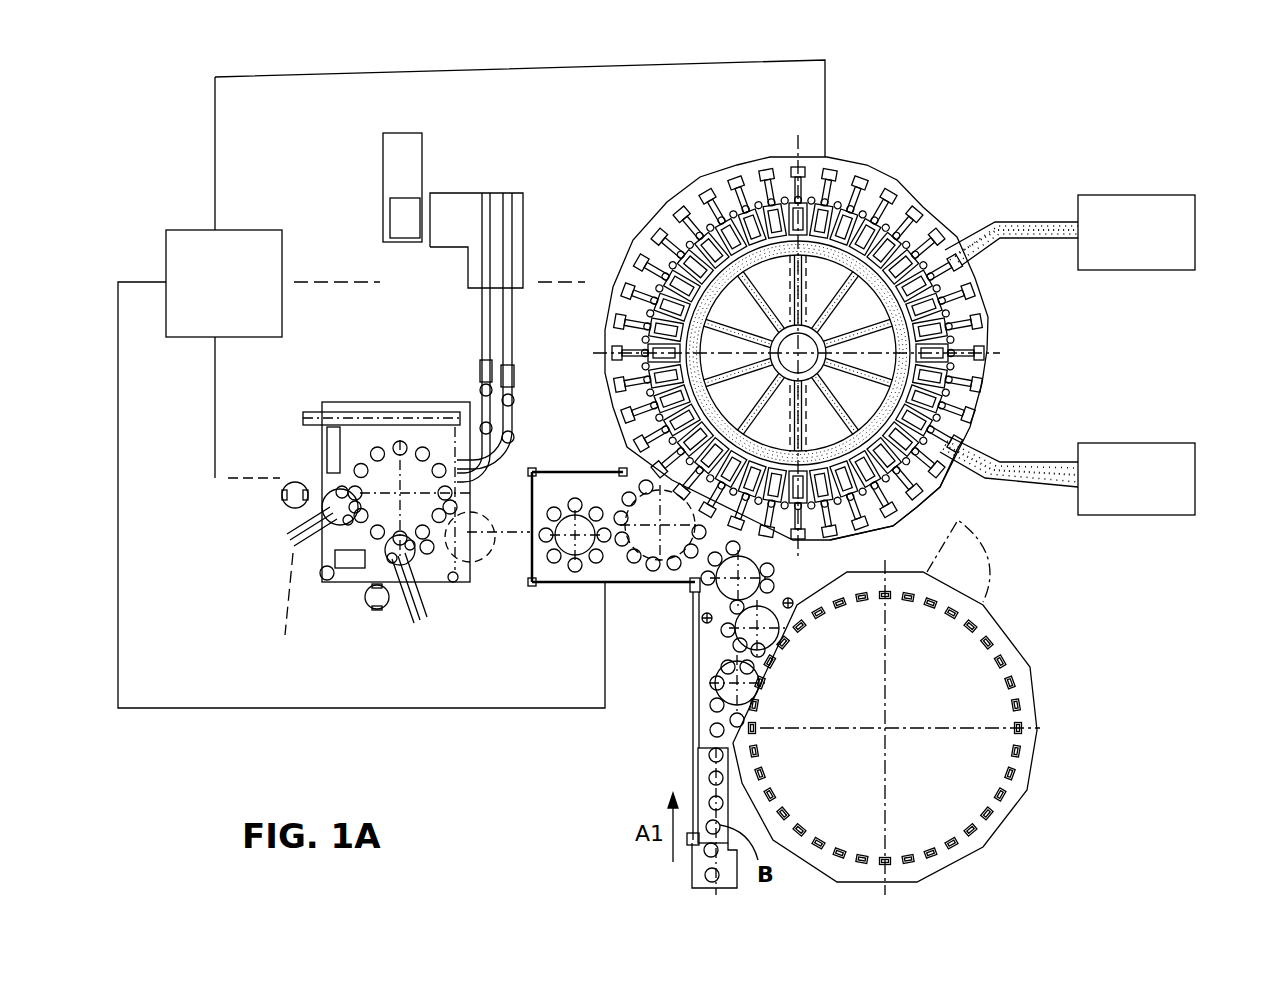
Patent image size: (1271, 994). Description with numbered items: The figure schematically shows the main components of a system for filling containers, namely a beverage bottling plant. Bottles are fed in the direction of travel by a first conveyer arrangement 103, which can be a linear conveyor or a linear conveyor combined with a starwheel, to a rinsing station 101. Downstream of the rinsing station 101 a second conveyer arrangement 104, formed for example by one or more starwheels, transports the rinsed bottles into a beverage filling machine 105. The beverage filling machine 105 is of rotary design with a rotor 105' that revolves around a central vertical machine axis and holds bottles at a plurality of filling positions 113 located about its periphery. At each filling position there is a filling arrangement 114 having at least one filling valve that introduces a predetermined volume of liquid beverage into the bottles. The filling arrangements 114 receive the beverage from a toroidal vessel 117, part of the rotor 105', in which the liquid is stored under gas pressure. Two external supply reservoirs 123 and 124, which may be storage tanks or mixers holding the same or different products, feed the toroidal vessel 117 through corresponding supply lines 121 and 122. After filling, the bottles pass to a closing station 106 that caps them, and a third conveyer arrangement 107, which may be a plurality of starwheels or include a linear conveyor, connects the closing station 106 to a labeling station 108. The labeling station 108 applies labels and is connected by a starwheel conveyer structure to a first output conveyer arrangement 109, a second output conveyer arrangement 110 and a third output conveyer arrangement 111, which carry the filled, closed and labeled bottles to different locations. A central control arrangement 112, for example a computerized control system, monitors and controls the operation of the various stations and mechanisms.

The rinsing station 101 is at (1060, 622).
The first conveyer arrangement 103 is at (730, 808).
The second conveyer arrangement 104 is at (702, 650).
The beverage filling machine 105 is at (856, 347).
The rotor 105' is at (905, 196).
The closing station 106 is at (593, 462).
The third conveyer arrangement 107 is at (544, 600).
The labeling station 108 is at (350, 628).
The first output conveyer arrangement 109 is at (512, 383).
The second output conveyer arrangement 110 is at (482, 323).
The third output conveyer arrangement 111 is at (355, 412).
The central control arrangement 112 is at (246, 300).
The filling positions 113 is at (978, 284).
The filling arrangement 114 is at (968, 382).
The toroidal vessel 117 is at (917, 507).
The supply line 121 is at (1023, 218).
The supply line 122 is at (1030, 460).
The external supply reservoir 123 is at (1185, 242).
The external supply reservoir 124 is at (1192, 487).